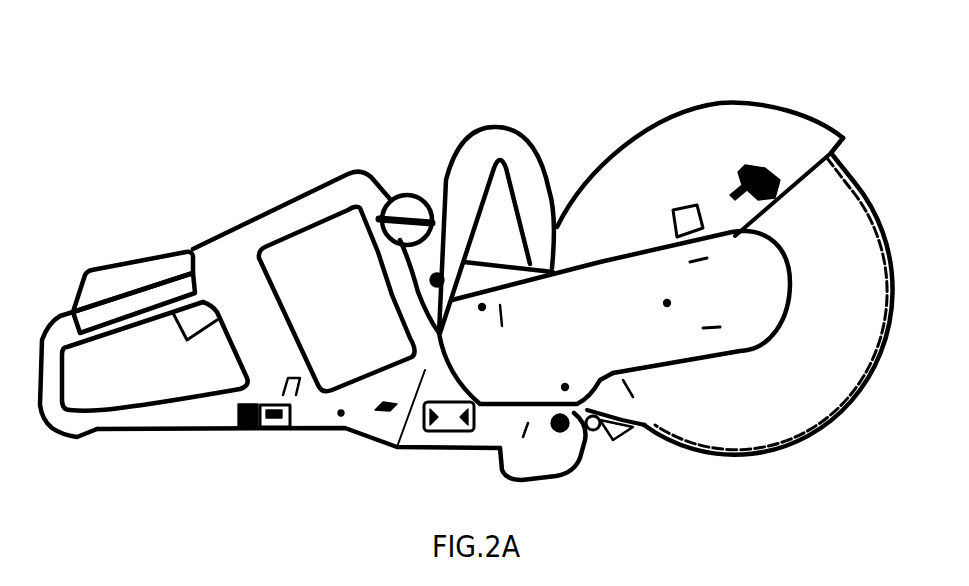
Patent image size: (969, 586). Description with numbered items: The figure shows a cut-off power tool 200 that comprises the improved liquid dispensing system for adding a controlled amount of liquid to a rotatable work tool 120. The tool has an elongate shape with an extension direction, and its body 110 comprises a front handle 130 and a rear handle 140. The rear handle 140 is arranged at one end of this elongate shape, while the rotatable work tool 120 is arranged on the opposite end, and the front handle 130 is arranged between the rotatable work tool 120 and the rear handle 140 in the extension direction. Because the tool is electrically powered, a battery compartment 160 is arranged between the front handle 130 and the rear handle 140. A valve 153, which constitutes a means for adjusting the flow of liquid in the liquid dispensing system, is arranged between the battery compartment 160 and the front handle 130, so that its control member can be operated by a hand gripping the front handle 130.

The cut-off power tool 200 is at (466, 287).
The body 110 is at (313, 198).
The rotatable work tool 120 is at (834, 359).
The front handle 130 is at (502, 147).
The rear handle 140 is at (164, 278).
The valve 153 is at (394, 252).
The battery compartment 160 is at (337, 297).